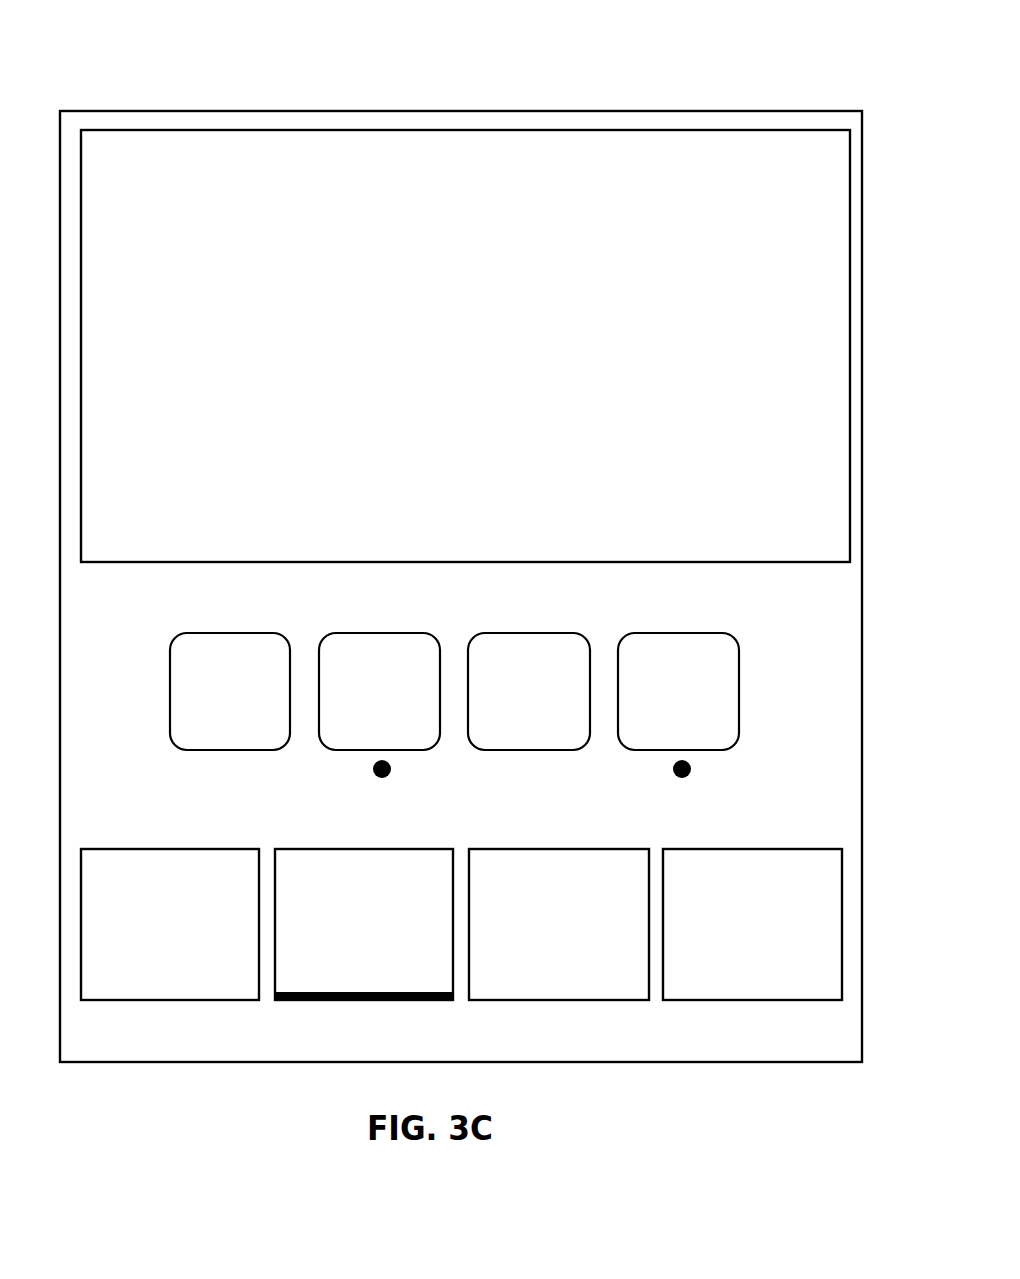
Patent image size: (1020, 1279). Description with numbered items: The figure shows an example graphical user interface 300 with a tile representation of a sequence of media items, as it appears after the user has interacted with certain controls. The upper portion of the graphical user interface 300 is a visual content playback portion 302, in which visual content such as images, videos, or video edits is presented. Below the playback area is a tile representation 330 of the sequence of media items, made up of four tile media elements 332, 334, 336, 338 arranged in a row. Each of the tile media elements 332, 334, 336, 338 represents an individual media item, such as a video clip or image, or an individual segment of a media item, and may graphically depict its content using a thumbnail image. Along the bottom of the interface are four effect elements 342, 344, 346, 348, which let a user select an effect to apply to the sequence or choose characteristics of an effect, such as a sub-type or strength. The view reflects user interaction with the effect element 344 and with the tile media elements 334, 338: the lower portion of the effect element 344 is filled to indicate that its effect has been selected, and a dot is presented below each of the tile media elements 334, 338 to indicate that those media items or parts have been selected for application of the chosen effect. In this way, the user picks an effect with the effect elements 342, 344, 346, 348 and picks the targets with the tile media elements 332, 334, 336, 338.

The graphical user interface 300 is at (485, 110).
The visual content playback portion 302 is at (465, 346).
The tile representation 330 is at (440, 612).
The tile media element 332 is at (230, 691).
The tile media element 334 is at (379, 705).
The tile media element 336 is at (529, 691).
The tile media element 338 is at (678, 705).
The effect element 342 is at (170, 924).
The effect element 344 is at (364, 925).
The effect element 346 is at (559, 924).
The effect element 348 is at (752, 924).